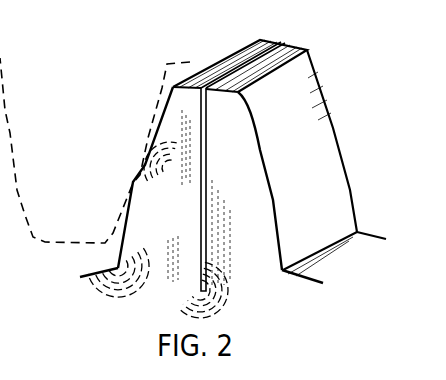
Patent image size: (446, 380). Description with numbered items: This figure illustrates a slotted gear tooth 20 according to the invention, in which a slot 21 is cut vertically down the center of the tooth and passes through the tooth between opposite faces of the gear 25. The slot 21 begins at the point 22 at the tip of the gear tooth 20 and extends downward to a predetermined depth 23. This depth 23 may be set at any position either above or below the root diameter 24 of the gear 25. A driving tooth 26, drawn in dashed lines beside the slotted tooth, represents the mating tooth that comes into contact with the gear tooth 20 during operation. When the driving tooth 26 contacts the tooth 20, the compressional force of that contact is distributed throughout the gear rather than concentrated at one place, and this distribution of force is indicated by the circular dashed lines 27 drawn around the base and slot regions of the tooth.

The gear tooth 20 is at (334, 108).
The slot 21 is at (207, 151).
The point of the gear tooth 22 is at (290, 47).
The predetermined depth 23 is at (199, 291).
The root diameter 24 is at (311, 279).
The gear 25 is at (331, 317).
The driving tooth 26 is at (81, 151).
The circular dashed lines 27 is at (158, 190).